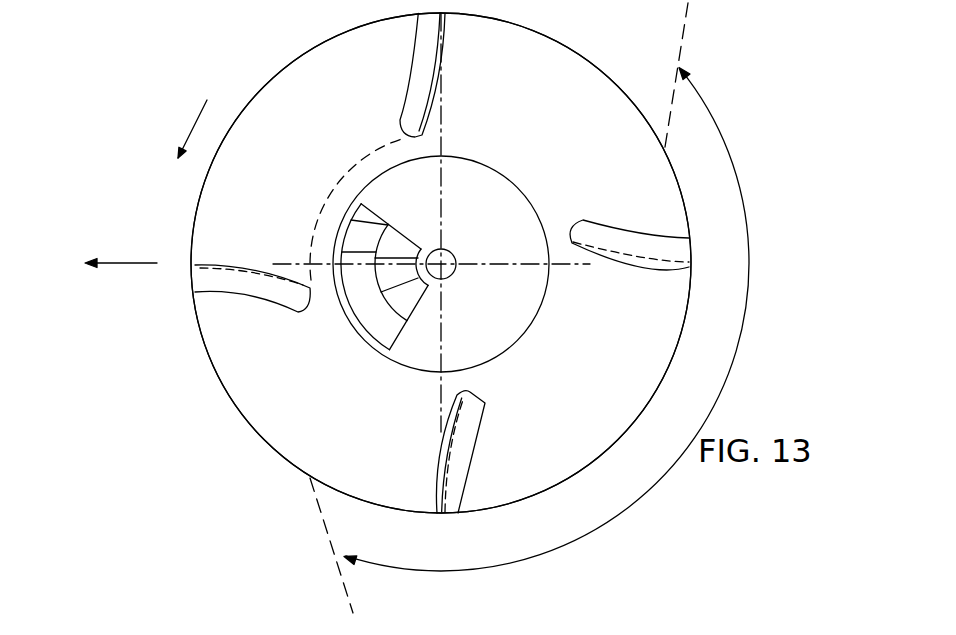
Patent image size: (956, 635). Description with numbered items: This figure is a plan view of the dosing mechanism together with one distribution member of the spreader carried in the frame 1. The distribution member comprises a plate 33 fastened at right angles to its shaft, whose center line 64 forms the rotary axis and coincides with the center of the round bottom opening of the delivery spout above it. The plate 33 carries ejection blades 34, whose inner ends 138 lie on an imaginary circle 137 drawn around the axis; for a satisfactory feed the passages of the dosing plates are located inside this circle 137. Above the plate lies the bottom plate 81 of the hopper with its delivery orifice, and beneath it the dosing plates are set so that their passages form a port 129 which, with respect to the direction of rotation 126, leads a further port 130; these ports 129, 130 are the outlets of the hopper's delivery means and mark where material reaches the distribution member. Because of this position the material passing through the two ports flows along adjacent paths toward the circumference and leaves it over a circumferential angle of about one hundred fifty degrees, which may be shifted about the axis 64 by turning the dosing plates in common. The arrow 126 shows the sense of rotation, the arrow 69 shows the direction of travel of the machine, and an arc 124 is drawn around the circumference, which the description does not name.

The frame 1 is at (302, 52).
The plate 33 is at (658, 327).
The ejection blades 34 is at (426, 62).
The center line 64 is at (444, 262).
The direction 69 is at (151, 240).
The bottom plate 81 is at (497, 198).
The rotation direction arc 124 is at (653, 490).
The arrow 126 is at (192, 123).
The port 129 is at (402, 256).
The further port 130 is at (360, 238).
The imaginary circle 137 is at (378, 148).
The inner ends 138 is at (443, 126).